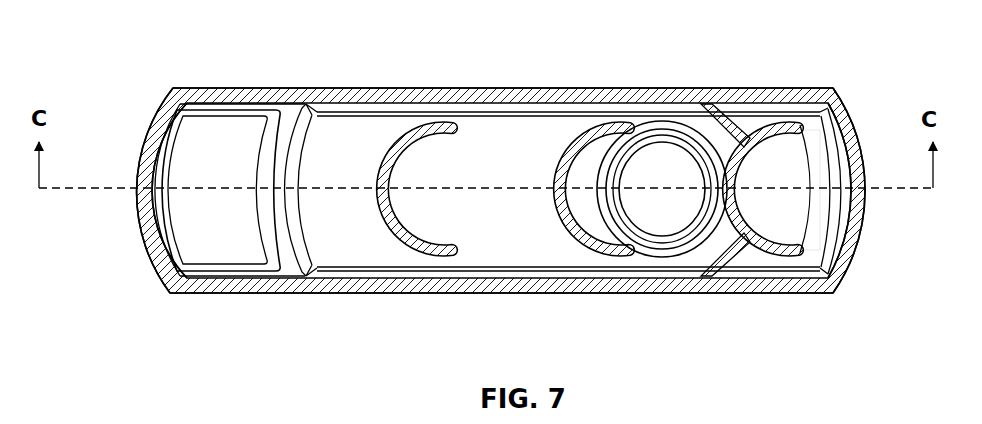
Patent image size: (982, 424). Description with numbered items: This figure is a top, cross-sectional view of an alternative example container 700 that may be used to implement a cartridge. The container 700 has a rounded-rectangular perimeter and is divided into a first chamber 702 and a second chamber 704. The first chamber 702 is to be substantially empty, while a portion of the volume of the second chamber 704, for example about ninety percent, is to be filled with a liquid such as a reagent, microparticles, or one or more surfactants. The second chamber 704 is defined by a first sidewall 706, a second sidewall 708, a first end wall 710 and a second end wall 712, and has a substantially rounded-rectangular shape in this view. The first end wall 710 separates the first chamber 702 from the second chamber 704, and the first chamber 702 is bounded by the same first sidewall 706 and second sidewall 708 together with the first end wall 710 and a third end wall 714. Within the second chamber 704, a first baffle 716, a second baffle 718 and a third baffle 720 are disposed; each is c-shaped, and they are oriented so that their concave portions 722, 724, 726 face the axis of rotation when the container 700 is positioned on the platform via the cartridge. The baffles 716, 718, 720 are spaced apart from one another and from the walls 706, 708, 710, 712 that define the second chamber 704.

The container 700 is at (832, 52).
The first chamber 702 is at (198, 128).
The second chamber 704 is at (822, 160).
The first sidewall 706 is at (353, 87).
The second sidewall 708 is at (380, 293).
The first end wall 710 is at (275, 203).
The second end wall 712 is at (862, 200).
The third end wall 714 is at (145, 208).
The first baffle 716 is at (377, 205).
The second baffle 718 is at (552, 213).
The third baffle 720 is at (730, 227).
The concave portion 722 is at (403, 153).
The concave portion 724 is at (640, 150).
The concave portion 726 is at (740, 205).